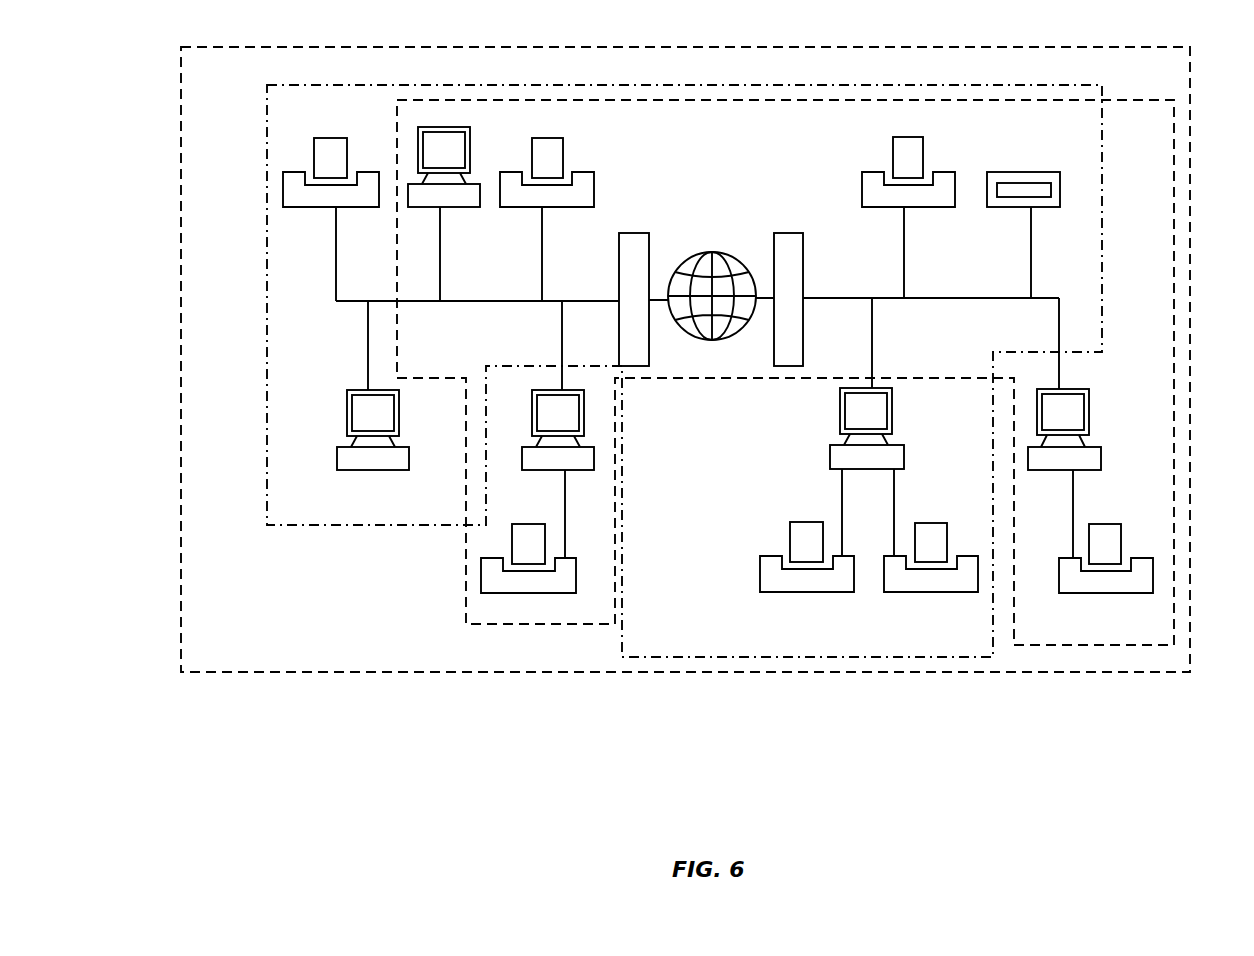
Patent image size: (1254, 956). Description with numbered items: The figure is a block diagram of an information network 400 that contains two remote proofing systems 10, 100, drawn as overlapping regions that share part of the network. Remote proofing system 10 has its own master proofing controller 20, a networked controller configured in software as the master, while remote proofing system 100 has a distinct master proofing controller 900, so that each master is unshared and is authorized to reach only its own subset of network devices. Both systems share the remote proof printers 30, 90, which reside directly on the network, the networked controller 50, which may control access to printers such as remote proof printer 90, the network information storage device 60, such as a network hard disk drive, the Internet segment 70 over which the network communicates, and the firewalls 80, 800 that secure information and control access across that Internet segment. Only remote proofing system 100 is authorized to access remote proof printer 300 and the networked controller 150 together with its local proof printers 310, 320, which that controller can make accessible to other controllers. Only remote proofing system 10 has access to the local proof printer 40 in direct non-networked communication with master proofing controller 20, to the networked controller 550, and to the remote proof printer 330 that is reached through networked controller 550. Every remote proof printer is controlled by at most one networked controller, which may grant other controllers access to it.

The remote proofing system 10 is at (1175, 327).
The master proofing controller 20 is at (1090, 418).
The remote proof printer 30 is at (948, 172).
The local proof printer 40 is at (1133, 593).
The networked controller 50 is at (470, 140).
The network information storage device 60 is at (1040, 172).
The Internet segment 70 is at (718, 252).
The information firewall 80 is at (792, 233).
The remote proof printer 90 is at (587, 172).
The remote proofing system 100 is at (1104, 233).
The networked controller 150 is at (840, 418).
The remote proof printer 300 is at (364, 172).
The remote proof printer 310 is at (815, 592).
The remote proof printer 320 is at (925, 592).
The remote proof printer 330 is at (556, 593).
The information network 400 is at (1023, 671).
The networked controller 550 is at (522, 457).
The information firewall 800 is at (636, 233).
The master proofing controller 900 is at (347, 403).